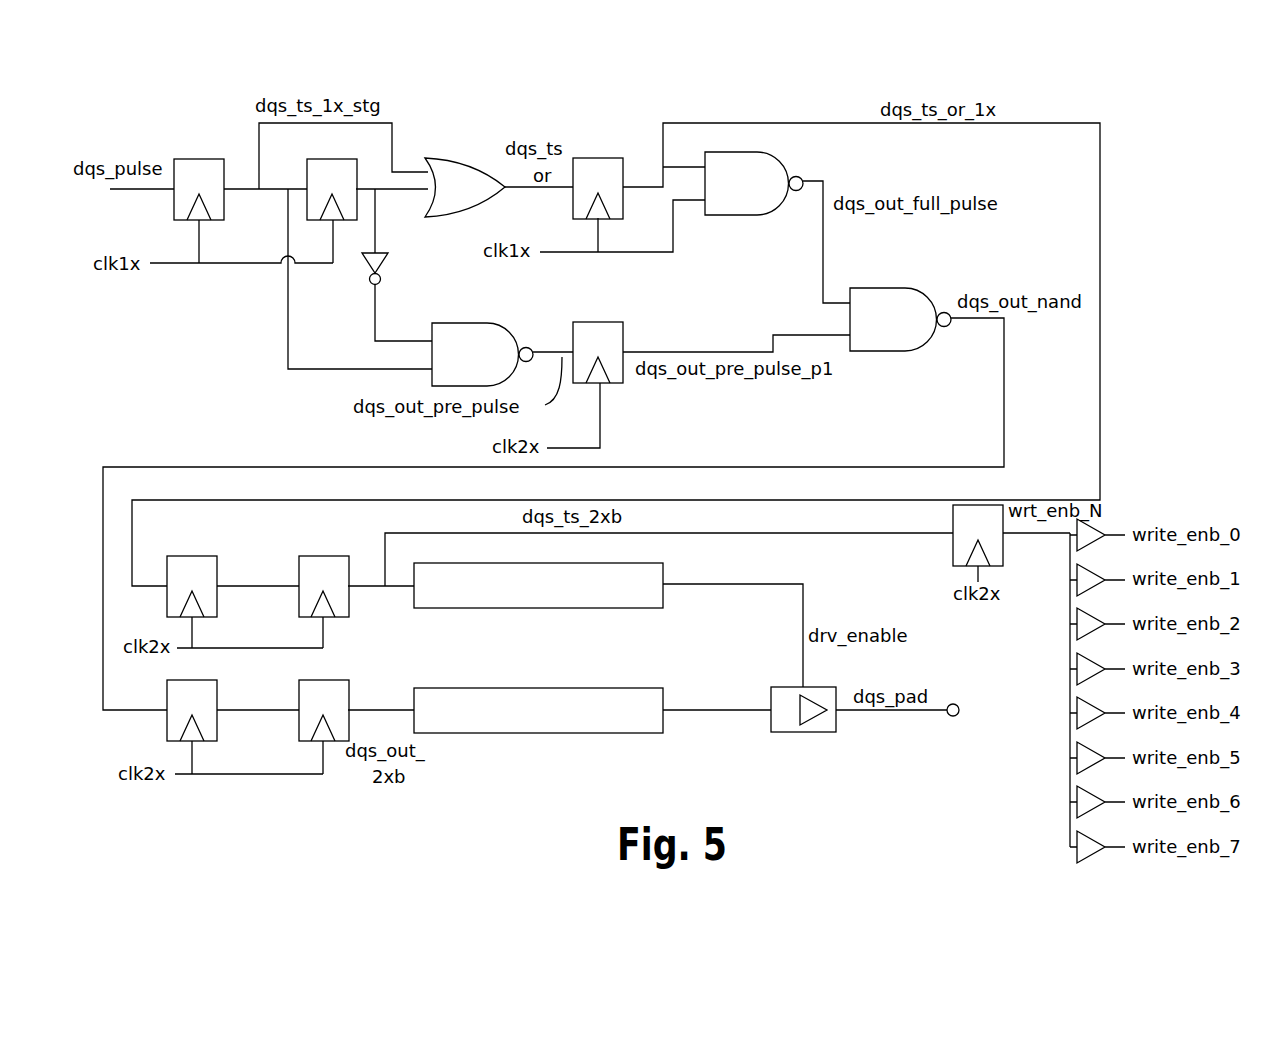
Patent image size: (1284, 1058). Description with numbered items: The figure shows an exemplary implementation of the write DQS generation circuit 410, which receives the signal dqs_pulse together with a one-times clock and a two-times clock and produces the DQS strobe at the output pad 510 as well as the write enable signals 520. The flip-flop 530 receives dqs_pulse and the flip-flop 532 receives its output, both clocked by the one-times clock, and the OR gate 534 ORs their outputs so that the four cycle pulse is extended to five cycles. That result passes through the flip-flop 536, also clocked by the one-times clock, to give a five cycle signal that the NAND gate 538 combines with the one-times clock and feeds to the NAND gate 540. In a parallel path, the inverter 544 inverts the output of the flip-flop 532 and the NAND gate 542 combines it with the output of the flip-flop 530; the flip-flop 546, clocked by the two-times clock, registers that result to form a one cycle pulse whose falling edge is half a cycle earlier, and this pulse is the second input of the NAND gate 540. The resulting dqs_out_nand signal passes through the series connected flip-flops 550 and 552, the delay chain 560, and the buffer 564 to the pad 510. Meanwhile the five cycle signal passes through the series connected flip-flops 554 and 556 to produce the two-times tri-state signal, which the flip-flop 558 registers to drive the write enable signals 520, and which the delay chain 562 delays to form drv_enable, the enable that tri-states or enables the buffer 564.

The write DQS generation circuit 410 is at (170, 95).
The output pad 510 is at (960, 710).
The write enable signals 520 is at (1168, 856).
The flip-flop 530 is at (213, 159).
The flip-flop 532 is at (326, 159).
The OR gate 534 is at (462, 158).
The flip-flop 536 is at (601, 158).
The NAND gate 538 is at (770, 215).
The NAND gate 540 is at (912, 288).
The NAND gate 542 is at (492, 323).
The inverter 544 is at (385, 258).
The flip-flop 546 is at (634, 311).
The flip-flop 550 is at (217, 680).
The flip-flop 552 is at (349, 680).
The flip-flop 554 is at (210, 556).
The flip-flop 556 is at (323, 556).
The flip-flop 558 is at (953, 560).
The delay chain 560 is at (657, 733).
The delay chain 562 is at (657, 608).
The buffer 564 is at (822, 732).